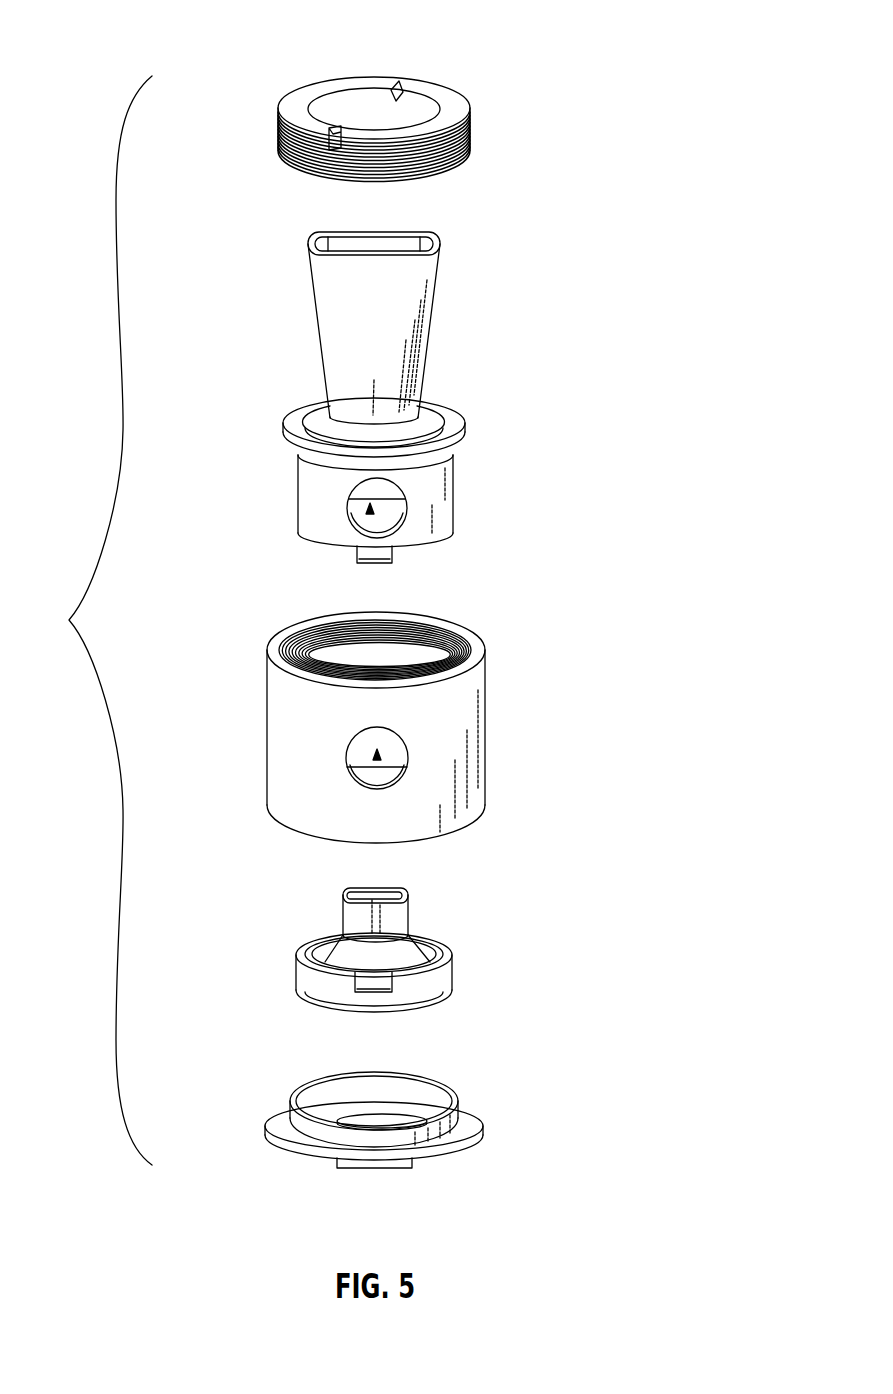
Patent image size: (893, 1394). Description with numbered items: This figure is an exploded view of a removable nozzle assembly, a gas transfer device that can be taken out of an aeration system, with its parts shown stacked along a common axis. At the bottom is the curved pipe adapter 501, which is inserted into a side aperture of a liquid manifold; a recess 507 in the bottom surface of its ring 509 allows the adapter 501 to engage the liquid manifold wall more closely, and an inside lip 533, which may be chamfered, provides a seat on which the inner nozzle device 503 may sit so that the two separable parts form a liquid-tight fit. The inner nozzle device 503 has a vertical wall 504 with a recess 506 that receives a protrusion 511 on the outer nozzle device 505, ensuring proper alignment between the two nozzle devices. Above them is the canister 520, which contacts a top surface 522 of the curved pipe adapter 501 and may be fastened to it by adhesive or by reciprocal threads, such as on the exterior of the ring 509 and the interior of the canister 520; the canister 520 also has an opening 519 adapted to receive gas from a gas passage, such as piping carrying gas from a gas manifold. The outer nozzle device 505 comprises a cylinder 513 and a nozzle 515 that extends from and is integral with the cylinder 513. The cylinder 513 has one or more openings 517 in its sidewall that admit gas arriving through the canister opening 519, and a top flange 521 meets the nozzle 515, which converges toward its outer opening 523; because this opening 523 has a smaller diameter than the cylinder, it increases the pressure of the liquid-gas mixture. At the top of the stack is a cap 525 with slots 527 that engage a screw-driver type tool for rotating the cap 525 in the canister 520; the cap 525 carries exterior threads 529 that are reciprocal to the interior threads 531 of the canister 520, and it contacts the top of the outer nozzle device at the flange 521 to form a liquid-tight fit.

The curved pipe adapter 501 is at (349, 1118).
The inner nozzle device 503 is at (367, 947).
The vertical wall 504 is at (437, 980).
The outer nozzle device 505 is at (372, 476).
The recess 506 is at (377, 988).
The recess 507 is at (373, 1168).
The ring 509 is at (447, 1083).
The protrusion 511 is at (397, 560).
The cylinder 513 is at (455, 488).
The nozzle 515 is at (409, 302).
The openings 517 is at (369, 514).
The opening 519 is at (377, 760).
The canister 520 is at (335, 723).
The top flange 521 is at (455, 423).
The top surface 522 is at (473, 1120).
The opening 523 is at (405, 246).
The cap 525 is at (460, 105).
The slots 527 is at (401, 90).
The exterior threads 529 is at (282, 158).
The interior threads 531 is at (283, 643).
The inside lip 533 is at (332, 1107).